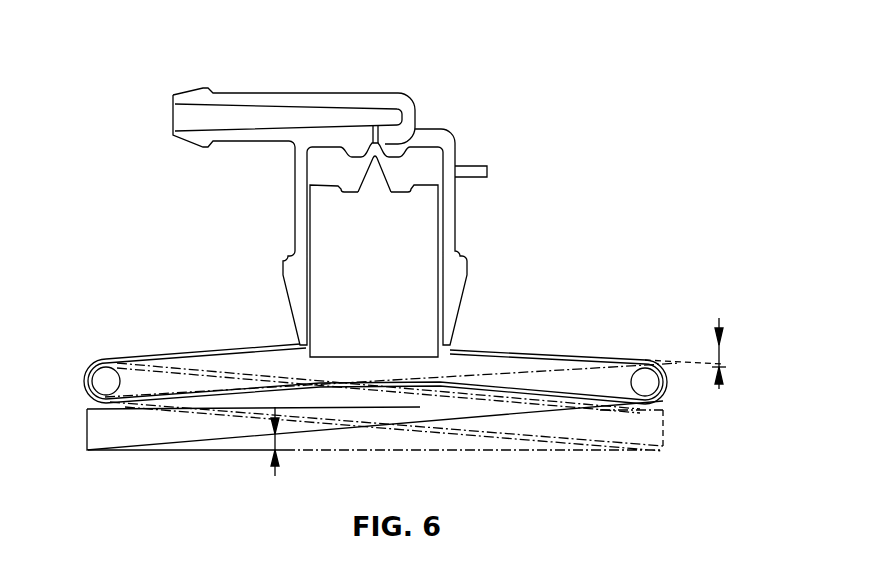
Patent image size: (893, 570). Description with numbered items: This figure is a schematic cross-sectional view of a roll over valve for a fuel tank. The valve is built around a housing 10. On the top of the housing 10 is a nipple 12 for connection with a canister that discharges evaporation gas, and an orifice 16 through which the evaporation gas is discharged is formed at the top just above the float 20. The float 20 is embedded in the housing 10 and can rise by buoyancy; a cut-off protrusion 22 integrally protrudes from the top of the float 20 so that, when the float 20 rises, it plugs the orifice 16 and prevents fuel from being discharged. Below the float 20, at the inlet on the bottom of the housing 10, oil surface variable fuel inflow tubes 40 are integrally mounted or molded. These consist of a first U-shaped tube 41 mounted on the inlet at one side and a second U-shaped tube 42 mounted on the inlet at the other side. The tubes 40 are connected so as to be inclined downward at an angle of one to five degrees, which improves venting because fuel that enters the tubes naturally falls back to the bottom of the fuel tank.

The housing 10 is at (301, 199).
The nipple 12 is at (230, 103).
The orifice 16 is at (413, 102).
The float 20 is at (423, 228).
The cut-off protrusion 22 is at (377, 175).
The oil surface variable fuel inflow tubes 40 is at (581, 325).
The first U-shaped tube 41 is at (98, 430).
The second U-shaped tube 42 is at (163, 356).